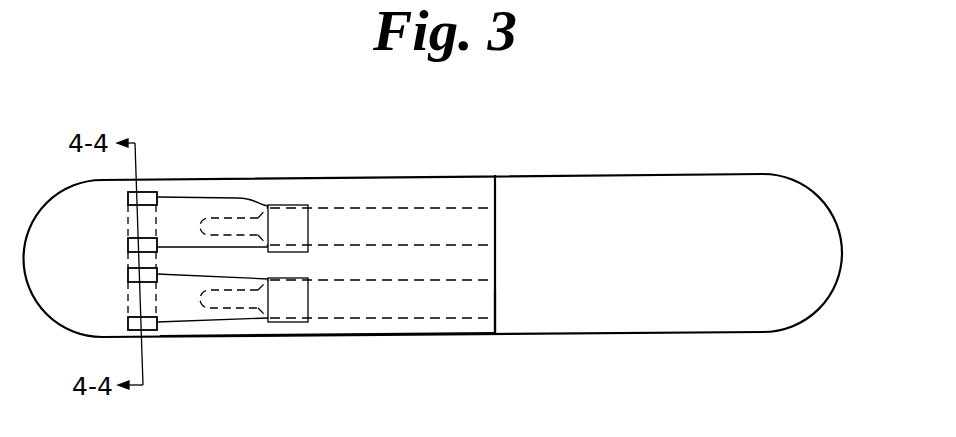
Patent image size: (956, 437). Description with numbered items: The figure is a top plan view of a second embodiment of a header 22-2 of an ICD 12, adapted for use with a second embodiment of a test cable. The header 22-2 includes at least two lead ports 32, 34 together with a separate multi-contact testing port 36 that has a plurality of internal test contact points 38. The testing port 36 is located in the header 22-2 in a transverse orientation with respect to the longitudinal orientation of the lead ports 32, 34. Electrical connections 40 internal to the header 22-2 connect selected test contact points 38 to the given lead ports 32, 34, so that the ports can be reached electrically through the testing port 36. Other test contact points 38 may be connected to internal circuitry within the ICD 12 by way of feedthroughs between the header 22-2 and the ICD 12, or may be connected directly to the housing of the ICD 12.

The ICD 12 is at (640, 333).
The header 22-2 is at (245, 338).
The lead port 32 is at (497, 216).
The lead port 34 is at (497, 301).
The multi-contact testing port 36 is at (150, 335).
The test contact points 38 is at (157, 196).
The electrical connections 40 is at (235, 197).